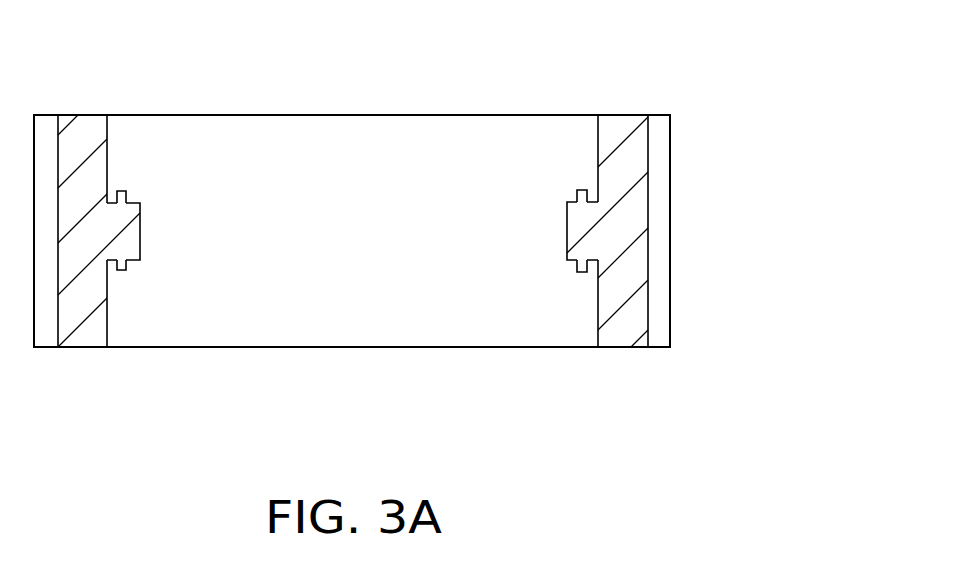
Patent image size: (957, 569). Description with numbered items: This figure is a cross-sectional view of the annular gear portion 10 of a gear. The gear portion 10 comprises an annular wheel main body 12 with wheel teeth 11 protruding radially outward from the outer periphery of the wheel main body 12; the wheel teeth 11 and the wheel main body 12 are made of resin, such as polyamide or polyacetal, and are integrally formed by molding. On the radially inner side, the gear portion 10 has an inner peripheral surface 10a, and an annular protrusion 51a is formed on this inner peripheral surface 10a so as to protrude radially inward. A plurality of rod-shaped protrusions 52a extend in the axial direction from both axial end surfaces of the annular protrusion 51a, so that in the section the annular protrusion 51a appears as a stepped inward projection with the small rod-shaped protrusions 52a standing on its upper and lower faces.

The gear portion 10 is at (700, 103).
The inner peripheral surface 10a is at (598, 322).
The wheel teeth 11 is at (658, 303).
The wheel main body 12 is at (627, 303).
The annular protrusion 51a is at (130, 232).
The rod-shaped protrusions 52a is at (120, 190).